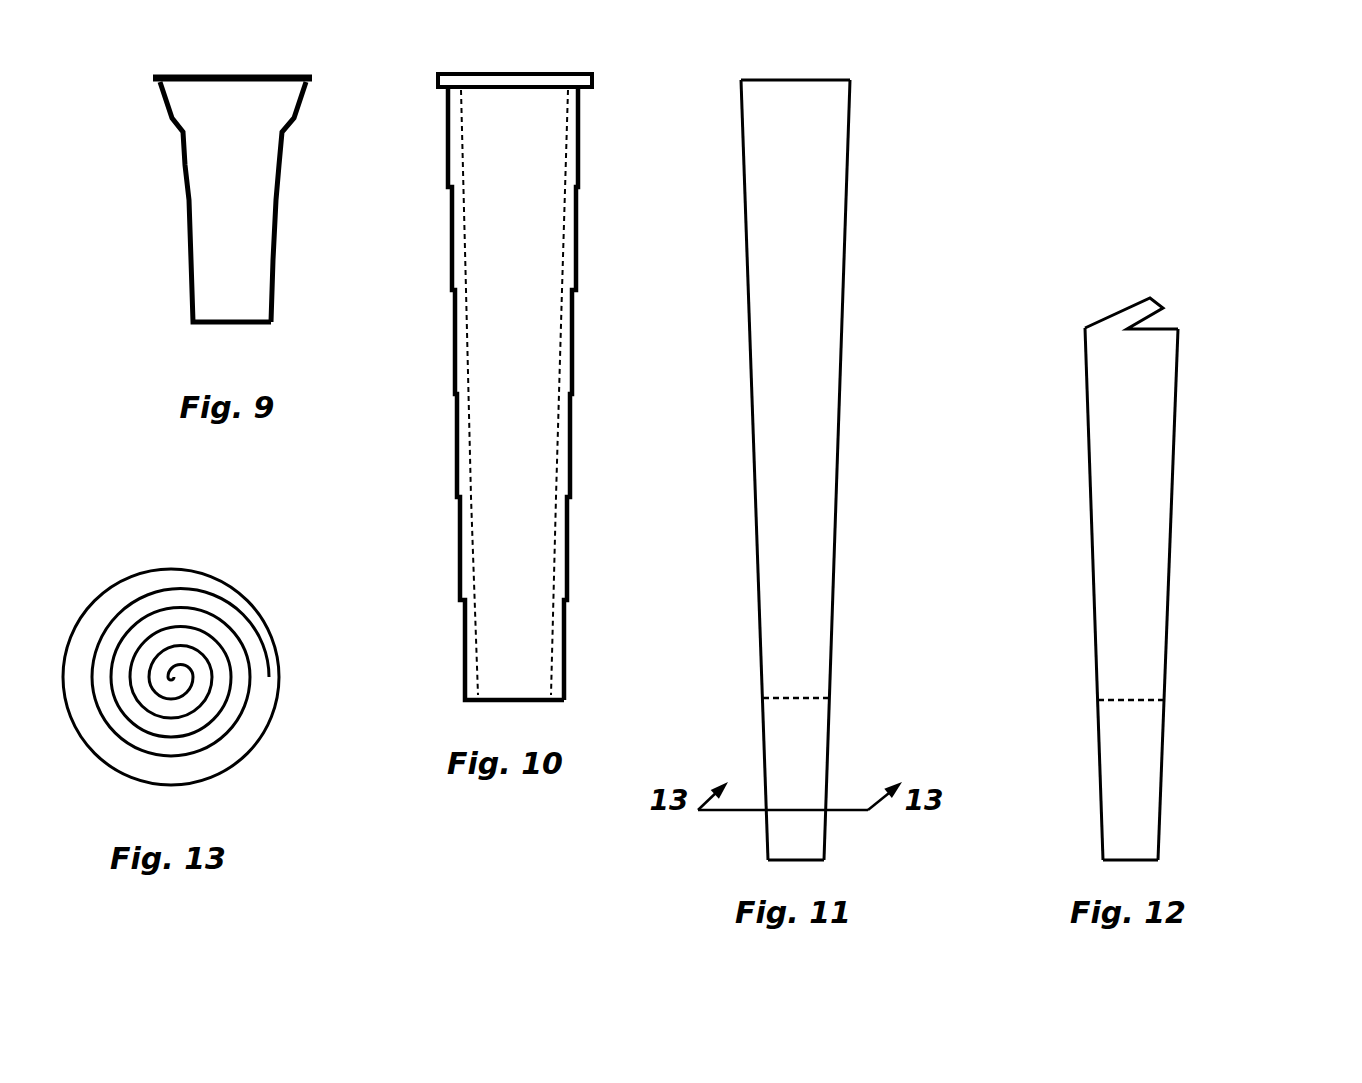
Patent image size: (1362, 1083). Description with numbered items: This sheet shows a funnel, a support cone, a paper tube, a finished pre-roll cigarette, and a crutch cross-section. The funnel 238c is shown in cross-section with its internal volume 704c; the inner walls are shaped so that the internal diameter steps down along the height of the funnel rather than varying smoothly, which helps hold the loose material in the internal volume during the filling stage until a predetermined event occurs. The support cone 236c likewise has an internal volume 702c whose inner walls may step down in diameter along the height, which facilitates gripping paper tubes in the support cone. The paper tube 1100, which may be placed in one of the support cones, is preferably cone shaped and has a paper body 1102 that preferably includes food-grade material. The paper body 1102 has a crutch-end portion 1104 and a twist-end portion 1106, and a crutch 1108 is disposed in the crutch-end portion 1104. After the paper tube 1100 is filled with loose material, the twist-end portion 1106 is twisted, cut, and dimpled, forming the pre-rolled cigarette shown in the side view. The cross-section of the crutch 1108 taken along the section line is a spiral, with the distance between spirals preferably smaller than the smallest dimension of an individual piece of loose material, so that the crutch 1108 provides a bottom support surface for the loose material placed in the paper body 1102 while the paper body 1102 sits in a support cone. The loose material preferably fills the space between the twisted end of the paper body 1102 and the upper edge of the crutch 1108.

In FIG. 9, the internal volume 704c is at (210, 200).
In FIG. 9, the funnel 238c is at (282, 170).
In FIG. 10, the internal volume 702c is at (515, 387).
In FIG. 10, the support cone 236c is at (572, 422).
In FIG. 11, the paper tube 1100 is at (796, 472).
In FIG. 12, the paper tube 1100 is at (1128, 577).
In FIG. 11, the paper body 1102 is at (845, 240).
In FIG. 12, the paper body 1102 is at (1172, 483).
In FIG. 11, the crutch-end portion 1104 is at (712, 838).
In FIG. 12, the crutch-end portion 1104 is at (1047, 840).
In FIG. 11, the twist-end portion 1106 is at (880, 117).
In FIG. 12, the twist-end portion 1106 is at (1198, 308).
In FIG. 11, the crutch 1108 is at (773, 716).
In FIG. 12, the crutch 1108 is at (1110, 717).
In FIG. 13, the crutch 1108 is at (196, 551).